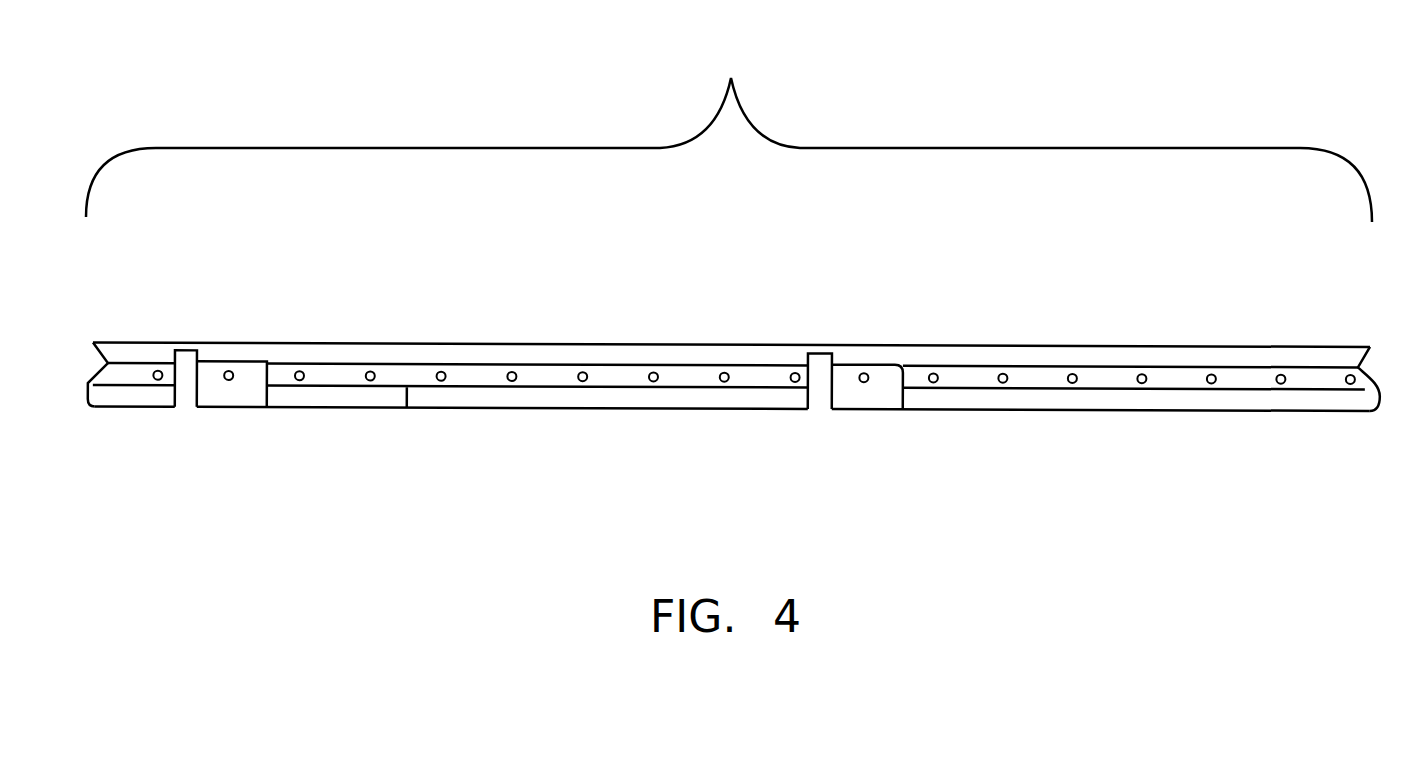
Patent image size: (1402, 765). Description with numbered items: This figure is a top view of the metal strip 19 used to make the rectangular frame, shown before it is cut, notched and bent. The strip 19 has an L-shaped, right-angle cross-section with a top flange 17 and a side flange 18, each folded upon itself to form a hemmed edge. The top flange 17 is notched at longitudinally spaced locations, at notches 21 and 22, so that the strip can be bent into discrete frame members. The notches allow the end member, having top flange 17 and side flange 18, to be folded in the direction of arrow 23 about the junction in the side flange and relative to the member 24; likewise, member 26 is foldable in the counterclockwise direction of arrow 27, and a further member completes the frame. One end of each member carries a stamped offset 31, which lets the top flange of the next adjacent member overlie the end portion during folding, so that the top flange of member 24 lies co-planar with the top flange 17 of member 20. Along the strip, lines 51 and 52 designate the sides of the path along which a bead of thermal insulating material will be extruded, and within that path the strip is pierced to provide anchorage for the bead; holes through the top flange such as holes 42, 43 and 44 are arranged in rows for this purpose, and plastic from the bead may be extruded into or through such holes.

The top flange 17 is at (1138, 402).
The side flange 18 is at (1121, 346).
The strip 19 is at (729, 130).
The member 20 is at (1004, 328).
The notch 21 is at (200, 375).
The notch 22 is at (836, 380).
The arrow 23 is at (1052, 535).
The member 24 is at (608, 312).
The member 26 is at (186, 300).
The arrow 27 is at (183, 540).
The offset 31 is at (858, 398).
The hole 42 is at (447, 370).
The hole 43 is at (1213, 373).
The hole 44 is at (155, 371).
The line 51 is at (397, 362).
The line 52 is at (406, 408).